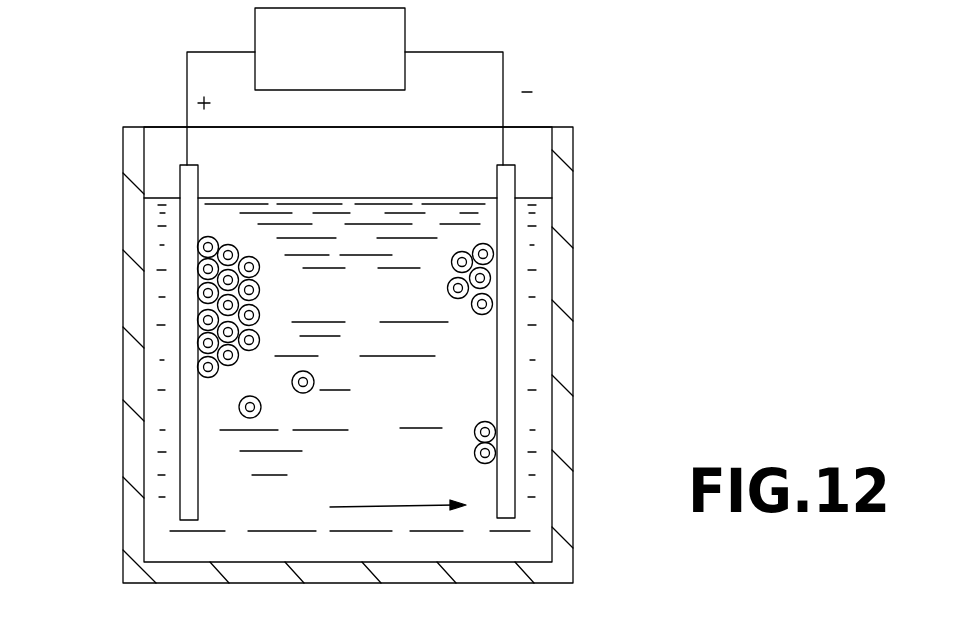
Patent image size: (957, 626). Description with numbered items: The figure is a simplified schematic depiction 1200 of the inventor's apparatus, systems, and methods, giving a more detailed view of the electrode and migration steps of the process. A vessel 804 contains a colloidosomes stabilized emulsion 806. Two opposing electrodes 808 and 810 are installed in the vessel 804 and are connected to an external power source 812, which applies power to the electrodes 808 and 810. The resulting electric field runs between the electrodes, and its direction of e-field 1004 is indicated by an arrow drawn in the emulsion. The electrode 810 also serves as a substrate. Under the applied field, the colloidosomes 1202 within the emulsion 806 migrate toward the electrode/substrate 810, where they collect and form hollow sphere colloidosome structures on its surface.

The vessel 804 is at (573, 365).
The colloidosomes stabilized emulsion 806 is at (466, 401).
The electrode 808 is at (515, 277).
The electrode 810 is at (180, 335).
The external power source 812 is at (405, 31).
The direction of e-field 1004 is at (330, 507).
The depiction 1200 is at (603, 80).
The colloidosomes 1202 is at (262, 290).